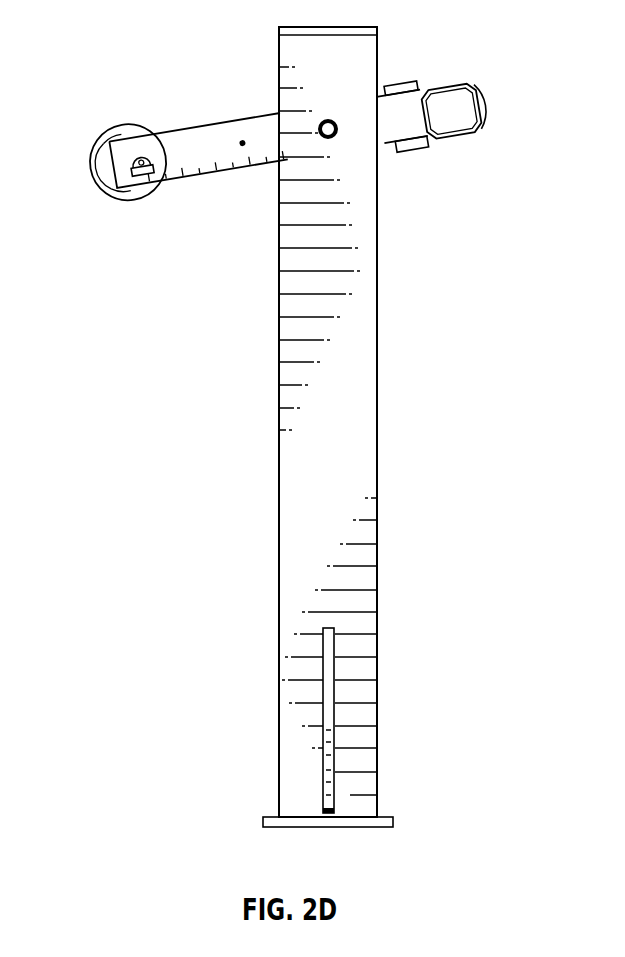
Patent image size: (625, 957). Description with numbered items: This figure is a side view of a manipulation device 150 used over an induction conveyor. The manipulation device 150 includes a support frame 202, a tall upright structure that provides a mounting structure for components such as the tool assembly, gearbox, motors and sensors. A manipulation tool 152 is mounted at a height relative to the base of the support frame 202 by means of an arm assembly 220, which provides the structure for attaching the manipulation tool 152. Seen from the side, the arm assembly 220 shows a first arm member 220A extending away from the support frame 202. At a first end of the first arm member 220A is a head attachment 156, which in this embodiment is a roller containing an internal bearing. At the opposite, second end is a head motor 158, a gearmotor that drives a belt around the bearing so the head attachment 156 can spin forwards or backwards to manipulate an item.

The manipulation device 150 is at (121, 43).
The manipulation tool 152 is at (392, 169).
The head attachment 156 is at (120, 192).
The head motor 158 is at (470, 118).
The support frame 202 is at (353, 352).
The arm assembly 220 is at (177, 188).
The first arm member 220A is at (218, 152).